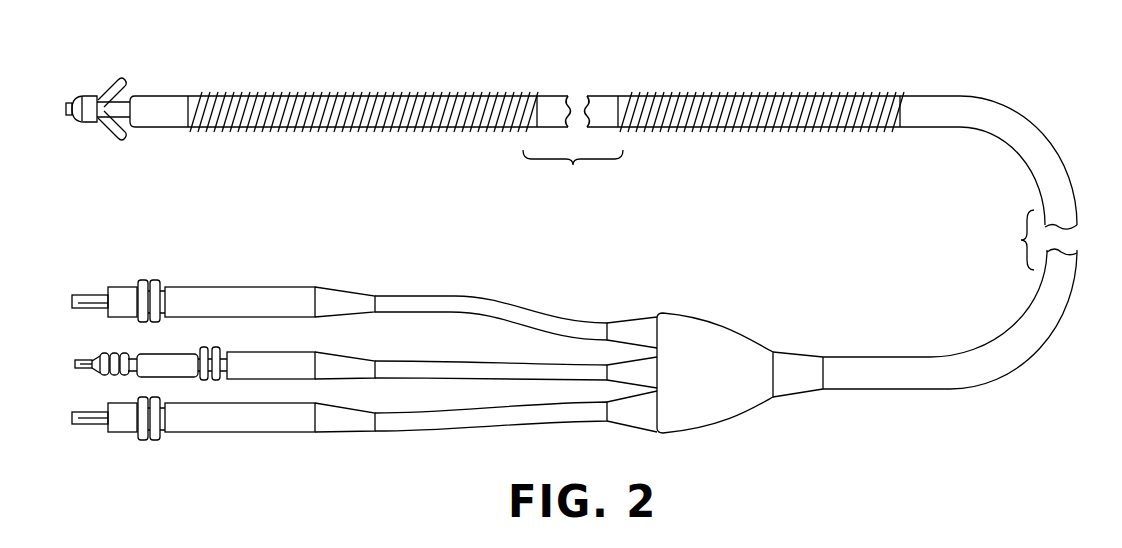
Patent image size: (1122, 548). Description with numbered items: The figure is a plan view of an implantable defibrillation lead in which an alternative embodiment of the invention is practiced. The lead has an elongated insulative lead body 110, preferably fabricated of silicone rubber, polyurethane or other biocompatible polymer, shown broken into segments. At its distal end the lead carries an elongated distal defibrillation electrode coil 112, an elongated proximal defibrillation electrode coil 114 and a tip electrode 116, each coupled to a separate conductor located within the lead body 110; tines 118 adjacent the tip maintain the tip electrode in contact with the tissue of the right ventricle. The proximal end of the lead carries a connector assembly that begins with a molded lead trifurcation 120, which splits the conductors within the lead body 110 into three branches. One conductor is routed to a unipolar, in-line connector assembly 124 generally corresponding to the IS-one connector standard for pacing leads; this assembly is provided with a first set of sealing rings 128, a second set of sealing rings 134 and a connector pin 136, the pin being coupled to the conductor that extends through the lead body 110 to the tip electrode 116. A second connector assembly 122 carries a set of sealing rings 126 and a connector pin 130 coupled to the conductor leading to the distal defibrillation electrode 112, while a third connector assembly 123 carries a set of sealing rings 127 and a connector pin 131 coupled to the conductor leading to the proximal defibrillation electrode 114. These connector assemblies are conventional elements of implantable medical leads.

The lead body 110 is at (548, 102).
The distal defibrillation electrode coil 112 is at (303, 98).
The proximal defibrillation electrode coil 114 is at (712, 100).
The tip electrode 116 is at (69, 97).
The tines 118 is at (119, 78).
The molded lead trifurcation 120 is at (707, 318).
The connector assembly 122 is at (218, 287).
The connector assembly 123 is at (265, 433).
The unipolar in-line connector assembly 124 is at (273, 354).
The sealing rings 126 is at (146, 280).
The sealing rings 127 is at (155, 441).
The first set of sealing rings 128 is at (214, 350).
The connector pin 130 is at (78, 293).
The connector pin 131 is at (92, 426).
The second set of sealing rings 134 is at (105, 351).
The connector pin 136 is at (80, 360).